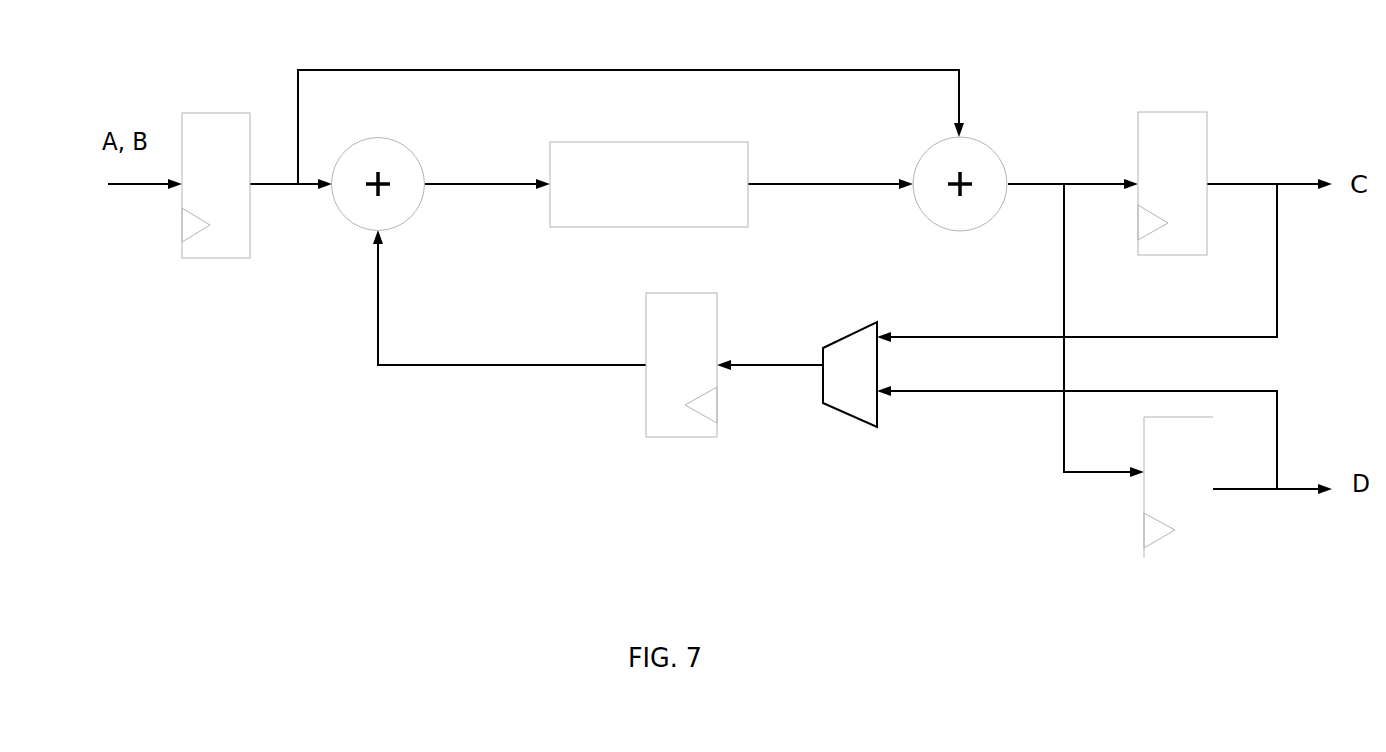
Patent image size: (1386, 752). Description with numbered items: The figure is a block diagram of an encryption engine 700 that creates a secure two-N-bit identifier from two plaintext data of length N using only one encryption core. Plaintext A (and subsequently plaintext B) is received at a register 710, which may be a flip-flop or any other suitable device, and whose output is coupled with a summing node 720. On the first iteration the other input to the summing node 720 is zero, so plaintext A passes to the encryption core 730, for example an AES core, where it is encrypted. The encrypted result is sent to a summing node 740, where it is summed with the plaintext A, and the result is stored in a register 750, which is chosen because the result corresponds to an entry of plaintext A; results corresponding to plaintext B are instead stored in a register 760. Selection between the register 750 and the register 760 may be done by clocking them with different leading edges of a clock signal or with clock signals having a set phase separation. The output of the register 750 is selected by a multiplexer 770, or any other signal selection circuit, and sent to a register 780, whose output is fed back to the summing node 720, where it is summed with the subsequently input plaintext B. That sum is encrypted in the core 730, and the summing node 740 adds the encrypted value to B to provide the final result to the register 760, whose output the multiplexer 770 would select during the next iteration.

The encryption engine 700 is at (365, 560).
The register 710 is at (215, 113).
The summing node 720 is at (404, 137).
The encryption core 730 is at (688, 142).
The summing node 740 is at (992, 148).
The register 750 is at (1207, 112).
The register 760 is at (1144, 548).
The multiplexer 770 is at (877, 322).
The register 780 is at (663, 390).